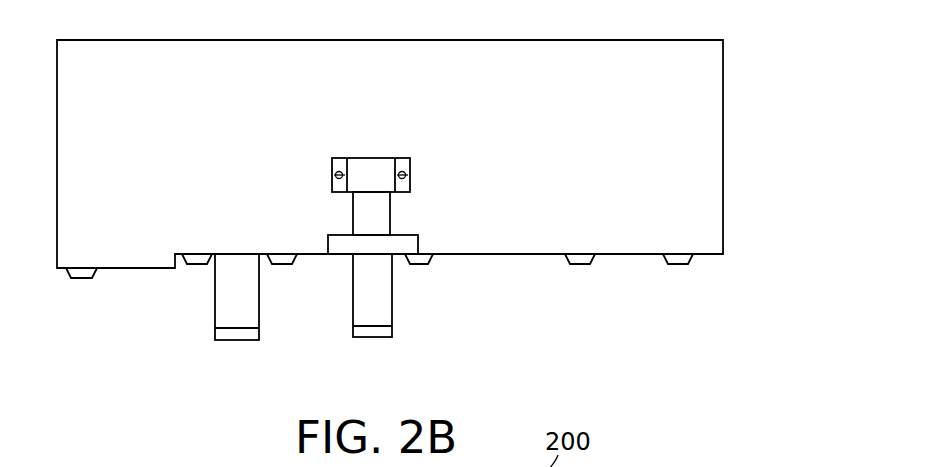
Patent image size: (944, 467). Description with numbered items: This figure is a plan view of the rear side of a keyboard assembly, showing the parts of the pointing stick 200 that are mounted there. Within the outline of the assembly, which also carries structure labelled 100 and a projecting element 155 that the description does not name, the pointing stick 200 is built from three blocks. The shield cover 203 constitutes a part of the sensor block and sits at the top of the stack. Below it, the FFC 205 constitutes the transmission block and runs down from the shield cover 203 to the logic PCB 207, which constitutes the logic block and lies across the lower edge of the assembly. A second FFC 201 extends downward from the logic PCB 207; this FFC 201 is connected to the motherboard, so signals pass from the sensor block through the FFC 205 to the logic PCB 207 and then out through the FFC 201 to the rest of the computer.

The housing 100 is at (727, 36).
The post 155 is at (260, 313).
The pointing stick 200 is at (418, 226).
The FFC 201 is at (392, 311).
The shield cover 203 is at (358, 167).
The FFC 205 is at (391, 222).
The logic PCB 207 is at (418, 242).